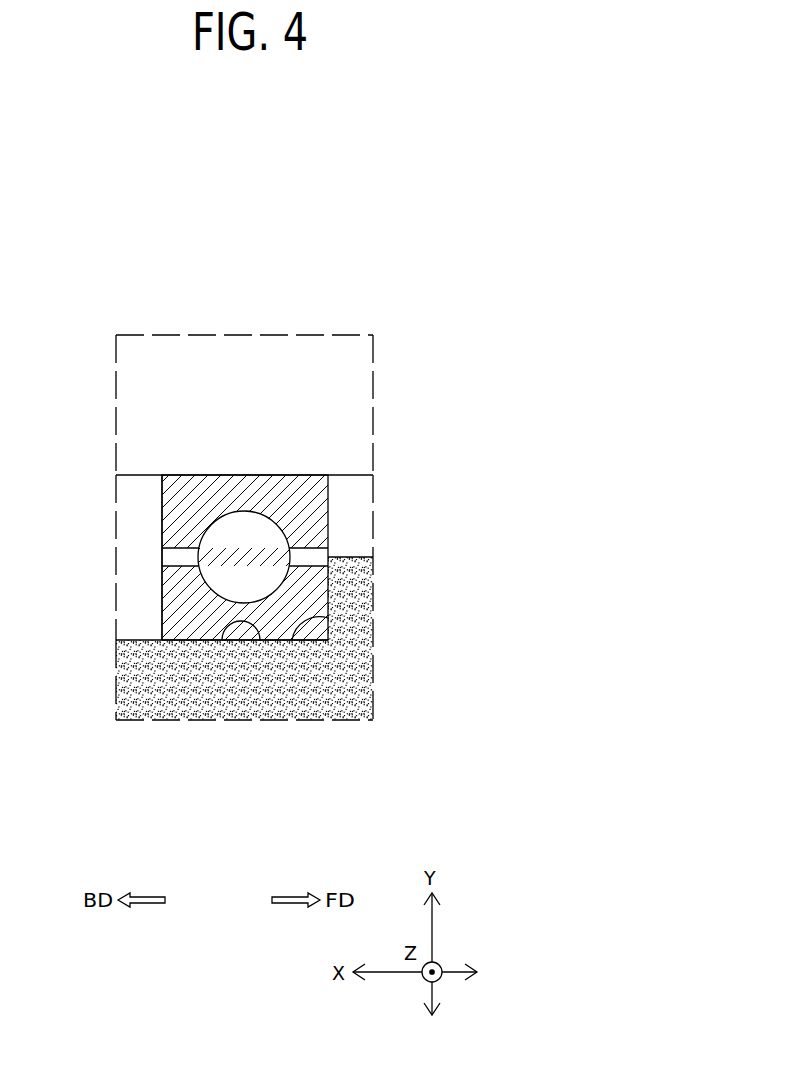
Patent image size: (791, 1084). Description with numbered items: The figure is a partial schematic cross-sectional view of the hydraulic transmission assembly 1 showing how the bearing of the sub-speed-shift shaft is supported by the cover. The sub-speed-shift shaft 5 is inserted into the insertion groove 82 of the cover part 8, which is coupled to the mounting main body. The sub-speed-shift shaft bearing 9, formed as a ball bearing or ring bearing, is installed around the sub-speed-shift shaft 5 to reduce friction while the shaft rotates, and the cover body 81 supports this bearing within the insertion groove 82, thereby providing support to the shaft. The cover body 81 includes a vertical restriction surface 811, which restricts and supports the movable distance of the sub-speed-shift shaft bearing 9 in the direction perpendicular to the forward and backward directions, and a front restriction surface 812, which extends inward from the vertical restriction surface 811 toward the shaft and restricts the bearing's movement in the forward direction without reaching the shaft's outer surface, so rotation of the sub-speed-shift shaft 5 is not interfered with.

The hydraulic transmission assembly 1 is at (49, 292).
The sub-speed-shift shaft 5 is at (302, 395).
The cover part 8 is at (272, 822).
The sub-speed-shift shaft bearing 9 is at (302, 497).
The cover body 81 is at (310, 785).
The insertion groove 82 is at (144, 529).
The vertical restriction surface 811 is at (260, 640).
The front restriction surface 812 is at (292, 640).